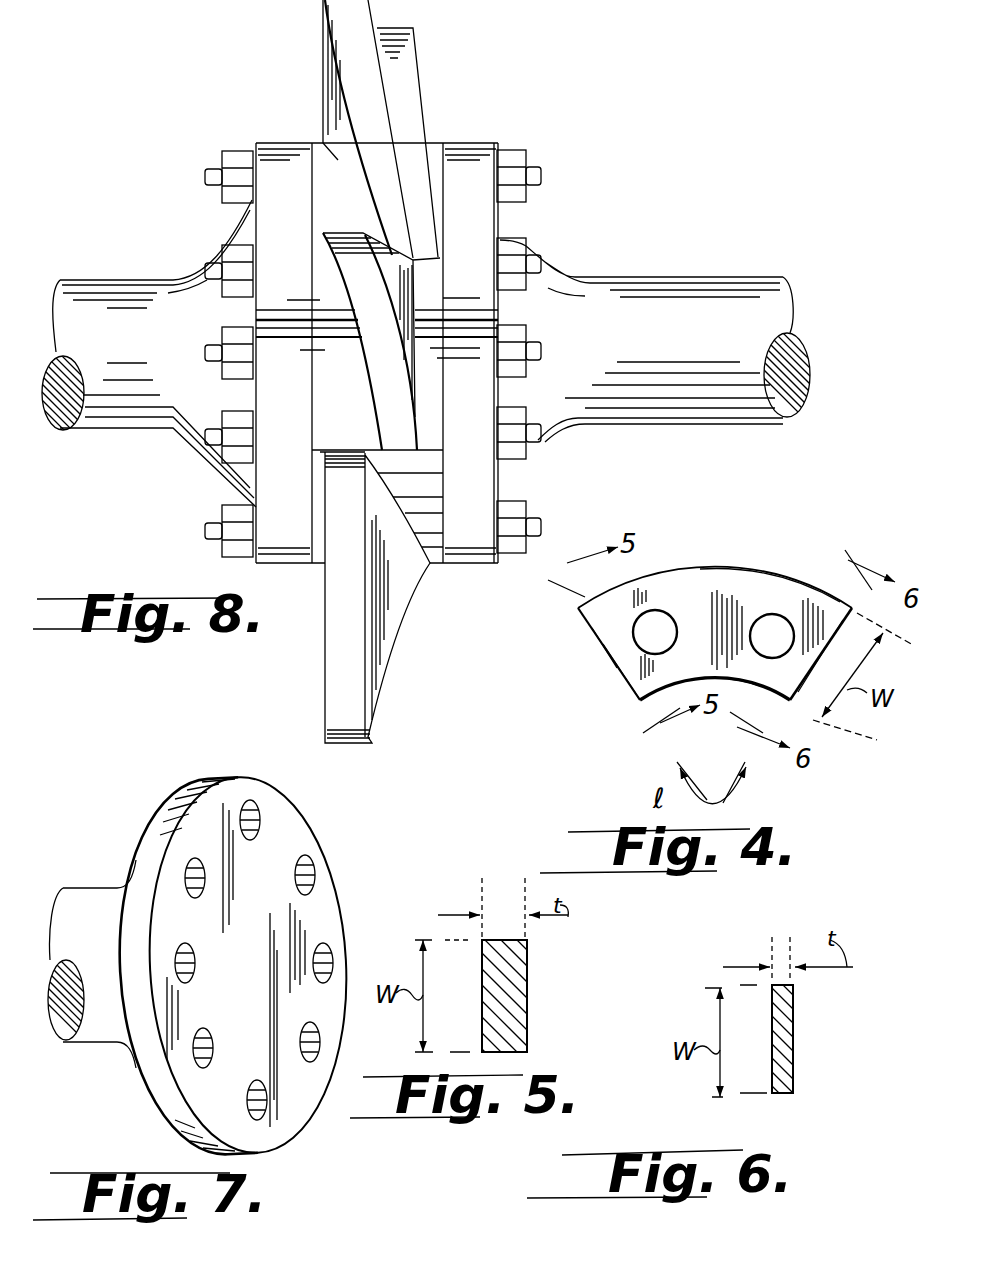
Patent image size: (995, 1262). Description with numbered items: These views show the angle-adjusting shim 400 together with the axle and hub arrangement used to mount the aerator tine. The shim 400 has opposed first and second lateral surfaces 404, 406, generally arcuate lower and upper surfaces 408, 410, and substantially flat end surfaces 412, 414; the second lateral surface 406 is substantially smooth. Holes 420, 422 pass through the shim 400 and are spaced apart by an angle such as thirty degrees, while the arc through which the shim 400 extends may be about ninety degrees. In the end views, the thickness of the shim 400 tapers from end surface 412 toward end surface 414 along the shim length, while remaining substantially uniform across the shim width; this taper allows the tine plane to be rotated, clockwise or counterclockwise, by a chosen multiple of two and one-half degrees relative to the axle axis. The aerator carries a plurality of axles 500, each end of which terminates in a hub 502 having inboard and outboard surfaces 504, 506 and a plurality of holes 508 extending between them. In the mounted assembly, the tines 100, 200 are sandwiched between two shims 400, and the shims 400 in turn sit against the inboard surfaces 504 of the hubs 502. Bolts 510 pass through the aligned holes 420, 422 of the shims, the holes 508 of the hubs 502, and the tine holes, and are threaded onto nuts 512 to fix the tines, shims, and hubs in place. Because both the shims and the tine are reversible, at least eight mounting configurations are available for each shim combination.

In FIG. 8, the tine 100 is at (347, 74).
In FIG. 8, the tine 200 is at (420, 72).
In FIG. 8, the shim 400 is at (490, 125).
In FIG. 4, the shim 400 is at (588, 658).
In FIG. 5, the shim 400 is at (535, 980).
In FIG. 6, the shim 400 is at (797, 1025).
In FIG. 5, the first lateral surface 404 is at (481, 1003).
In FIG. 6, the first lateral surface 404 is at (795, 1007).
In FIG. 4, the second lateral surface 406 is at (638, 672).
In FIG. 5, the second lateral surface 406 is at (529, 963).
In FIG. 6, the second lateral surface 406 is at (774, 1056).
In FIG. 4, the lower surface 408 is at (742, 684).
In FIG. 4, the upper surface 410 is at (838, 601).
In FIG. 4, the end surface 412 is at (820, 690).
In FIG. 5, the end surface 412 is at (527, 1020).
In FIG. 4, the end surface 414 is at (617, 672).
In FIG. 6, the end surface 414 is at (797, 1062).
In FIG. 4, the hole 420 is at (769, 634).
In FIG. 4, the hole 422 is at (657, 633).
In FIG. 8, the axle 500 is at (677, 277).
In FIG. 7, the axle 500 is at (83, 893).
In FIG. 8, the hub 502 is at (130, 430).
In FIG. 7, the hub 502 is at (158, 1082).
In FIG. 7, the inboard surface 504 is at (297, 1007).
In FIG. 7, the outboard surface 506 is at (163, 805).
In FIG. 7, the holes 508 is at (325, 963).
In FIG. 8, the bolts 510 is at (233, 240).
In FIG. 8, the nuts 512 is at (500, 238).